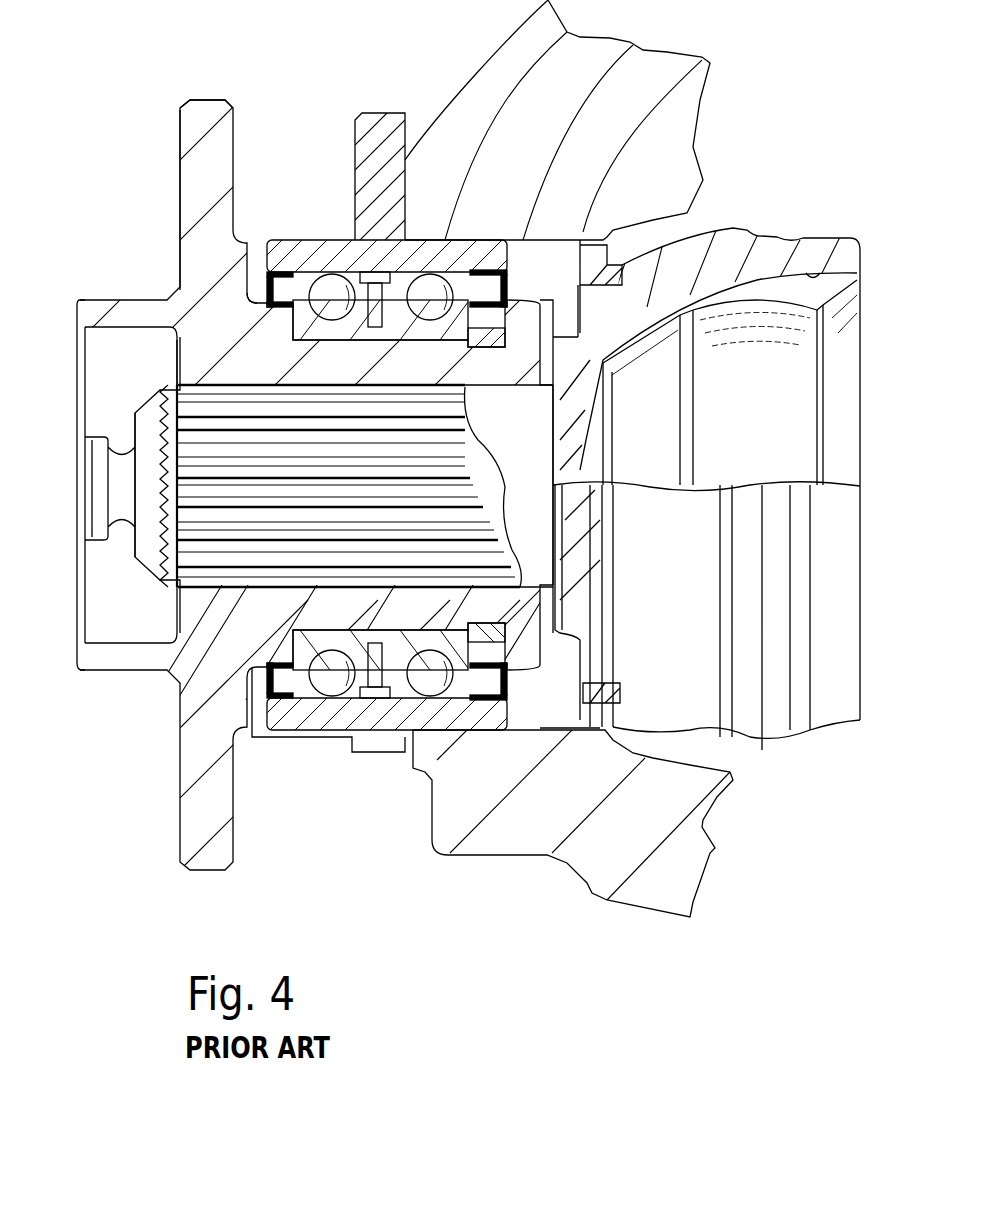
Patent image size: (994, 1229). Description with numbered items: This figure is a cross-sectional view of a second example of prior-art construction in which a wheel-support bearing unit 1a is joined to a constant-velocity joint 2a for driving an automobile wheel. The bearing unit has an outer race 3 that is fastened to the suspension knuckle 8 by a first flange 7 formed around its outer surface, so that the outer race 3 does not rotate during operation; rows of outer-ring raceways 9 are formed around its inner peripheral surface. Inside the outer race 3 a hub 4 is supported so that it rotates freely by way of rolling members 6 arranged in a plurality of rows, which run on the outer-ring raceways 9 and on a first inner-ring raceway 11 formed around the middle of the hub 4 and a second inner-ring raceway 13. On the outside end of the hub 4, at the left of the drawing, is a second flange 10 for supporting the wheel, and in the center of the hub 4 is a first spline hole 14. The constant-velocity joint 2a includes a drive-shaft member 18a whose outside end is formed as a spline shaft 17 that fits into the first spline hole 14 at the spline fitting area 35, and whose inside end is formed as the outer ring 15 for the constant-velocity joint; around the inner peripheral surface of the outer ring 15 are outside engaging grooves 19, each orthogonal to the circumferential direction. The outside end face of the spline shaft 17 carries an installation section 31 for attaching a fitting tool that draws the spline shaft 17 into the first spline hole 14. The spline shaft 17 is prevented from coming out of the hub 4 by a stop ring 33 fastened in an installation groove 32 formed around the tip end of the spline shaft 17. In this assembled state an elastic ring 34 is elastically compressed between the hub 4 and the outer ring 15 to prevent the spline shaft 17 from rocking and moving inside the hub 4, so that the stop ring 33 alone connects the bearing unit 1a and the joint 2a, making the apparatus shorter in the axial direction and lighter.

The wheel-support bearing unit 1a is at (243, 128).
The constant-velocity joint 2a is at (711, 439).
The outer race 3 is at (355, 740).
The hub 4 is at (193, 212).
The rolling members 6 is at (425, 290).
The first flange 7 is at (372, 118).
The knuckle 8 is at (652, 97).
The outer-ring raceways 9 is at (325, 697).
The second flange 10 is at (183, 118).
The first inner-ring raceway 11 is at (280, 240).
The second inner-ring raceway 13 is at (433, 290).
The first spline hole 14 is at (240, 575).
The outer ring for the constant-velocity joint 15 is at (760, 245).
The spline shaft 17 is at (185, 525).
The drive-shaft member 18a is at (578, 533).
The outside engaging grooves 19 is at (814, 272).
The installation section 31 is at (96, 440).
The installation groove 32 is at (180, 490).
The stop ring 33 is at (170, 385).
The elastic ring 34 is at (550, 605).
The spline fitting area 35 is at (262, 592).